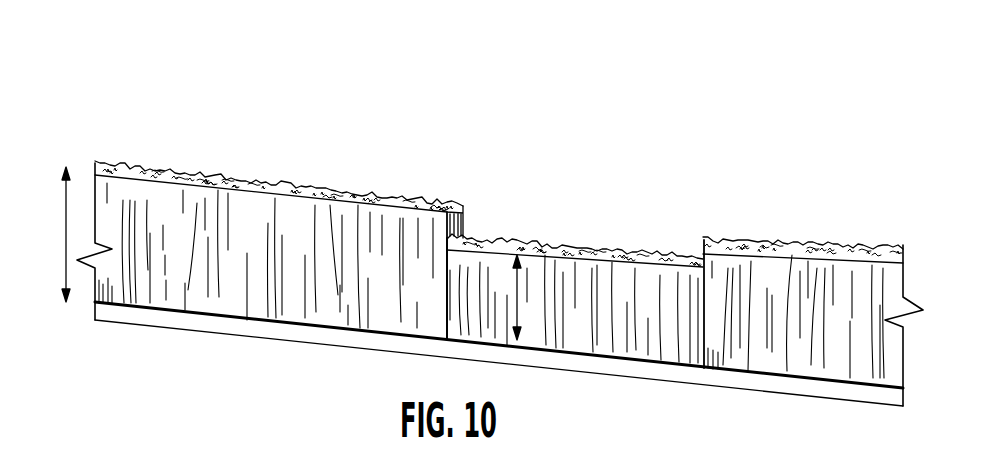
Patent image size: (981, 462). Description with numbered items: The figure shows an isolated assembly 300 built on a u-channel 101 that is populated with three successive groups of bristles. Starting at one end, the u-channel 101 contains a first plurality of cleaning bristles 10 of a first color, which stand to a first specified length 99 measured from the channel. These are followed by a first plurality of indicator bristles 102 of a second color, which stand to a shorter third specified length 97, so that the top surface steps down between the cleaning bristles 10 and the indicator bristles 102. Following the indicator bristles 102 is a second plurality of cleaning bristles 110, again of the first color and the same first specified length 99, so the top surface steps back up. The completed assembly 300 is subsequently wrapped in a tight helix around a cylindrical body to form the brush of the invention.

The assembly 300 is at (76, 100).
The first plurality of cleaning bristles 10 is at (262, 212).
The first plurality of indicator bristles 102 is at (488, 232).
The second plurality of cleaning bristles 110 is at (760, 242).
The first specified length 99 is at (62, 245).
The u-channel 101 is at (128, 310).
The third specified length 97 is at (533, 347).